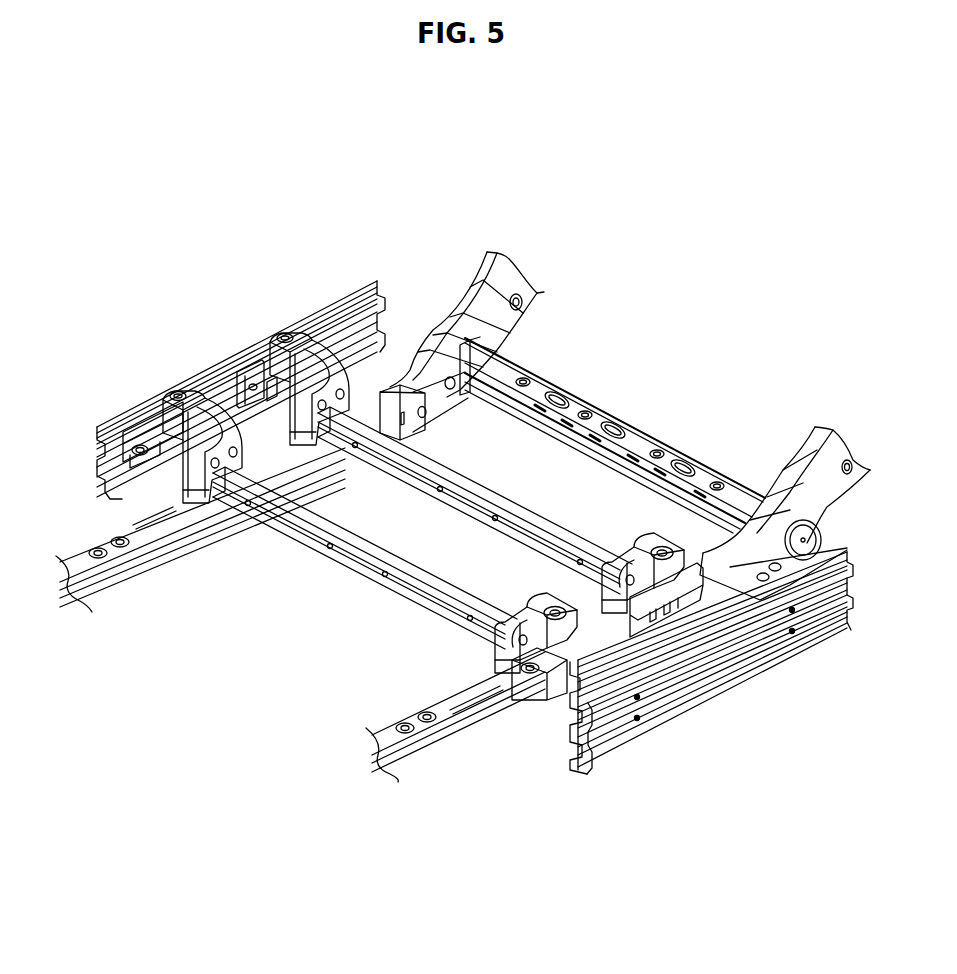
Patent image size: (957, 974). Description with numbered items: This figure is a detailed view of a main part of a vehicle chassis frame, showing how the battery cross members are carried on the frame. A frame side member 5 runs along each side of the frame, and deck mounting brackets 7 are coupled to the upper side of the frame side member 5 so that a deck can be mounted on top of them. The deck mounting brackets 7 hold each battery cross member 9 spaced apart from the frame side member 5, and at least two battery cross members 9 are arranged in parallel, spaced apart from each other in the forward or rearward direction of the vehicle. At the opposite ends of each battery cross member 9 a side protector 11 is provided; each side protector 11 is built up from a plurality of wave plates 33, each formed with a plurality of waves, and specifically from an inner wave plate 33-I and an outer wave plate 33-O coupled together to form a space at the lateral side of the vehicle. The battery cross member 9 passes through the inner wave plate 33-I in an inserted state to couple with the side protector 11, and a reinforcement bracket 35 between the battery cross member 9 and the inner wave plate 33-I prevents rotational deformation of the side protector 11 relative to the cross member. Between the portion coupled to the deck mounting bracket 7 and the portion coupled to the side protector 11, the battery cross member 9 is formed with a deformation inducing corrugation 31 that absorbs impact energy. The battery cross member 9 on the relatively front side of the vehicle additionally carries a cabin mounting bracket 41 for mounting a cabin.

The frame side member 5 is at (147, 548).
The deck mounting bracket 7 is at (300, 335).
The battery cross member 9 is at (350, 557).
The side protector 11 is at (337, 297).
The deformation inducing corrugation 31 is at (668, 636).
The wave plate 33 is at (683, 721).
The inner wave plate 33-I is at (568, 738).
The outer wave plate 33-O is at (633, 769).
The reinforcement bracket 35 is at (232, 373).
The cabin mounting bracket 41 is at (547, 672).